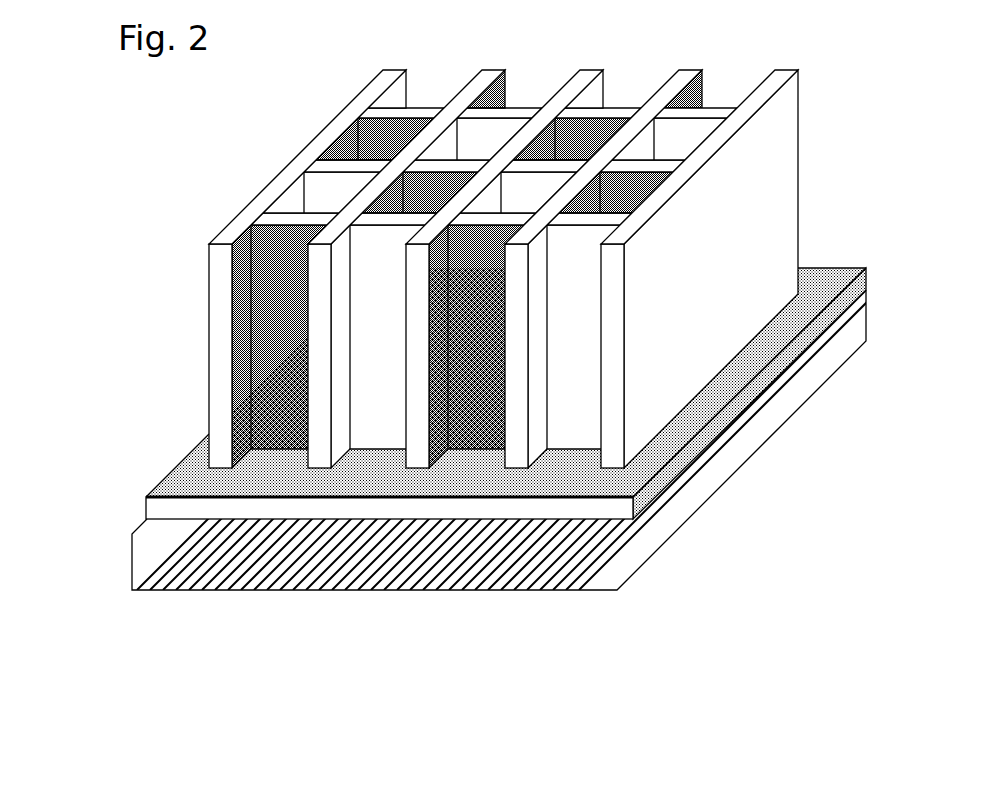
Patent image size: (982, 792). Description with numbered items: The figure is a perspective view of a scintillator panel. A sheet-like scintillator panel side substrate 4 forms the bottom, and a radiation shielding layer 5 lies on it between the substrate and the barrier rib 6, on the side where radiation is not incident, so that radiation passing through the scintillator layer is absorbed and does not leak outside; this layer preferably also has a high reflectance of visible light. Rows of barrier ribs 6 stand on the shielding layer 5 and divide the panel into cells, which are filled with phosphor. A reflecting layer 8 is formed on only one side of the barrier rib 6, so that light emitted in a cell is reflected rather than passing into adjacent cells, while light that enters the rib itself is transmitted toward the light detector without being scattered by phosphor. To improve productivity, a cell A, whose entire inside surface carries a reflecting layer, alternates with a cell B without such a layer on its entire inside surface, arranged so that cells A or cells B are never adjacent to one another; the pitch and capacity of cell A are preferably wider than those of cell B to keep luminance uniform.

The scintillator panel side substrate 4 is at (152, 538).
The radiation shielding layer 5 is at (170, 465).
The barrier rib 6 is at (241, 213).
The reflecting layer 8 is at (353, 141).
The cell A is at (627, 192).
The cell B is at (687, 132).